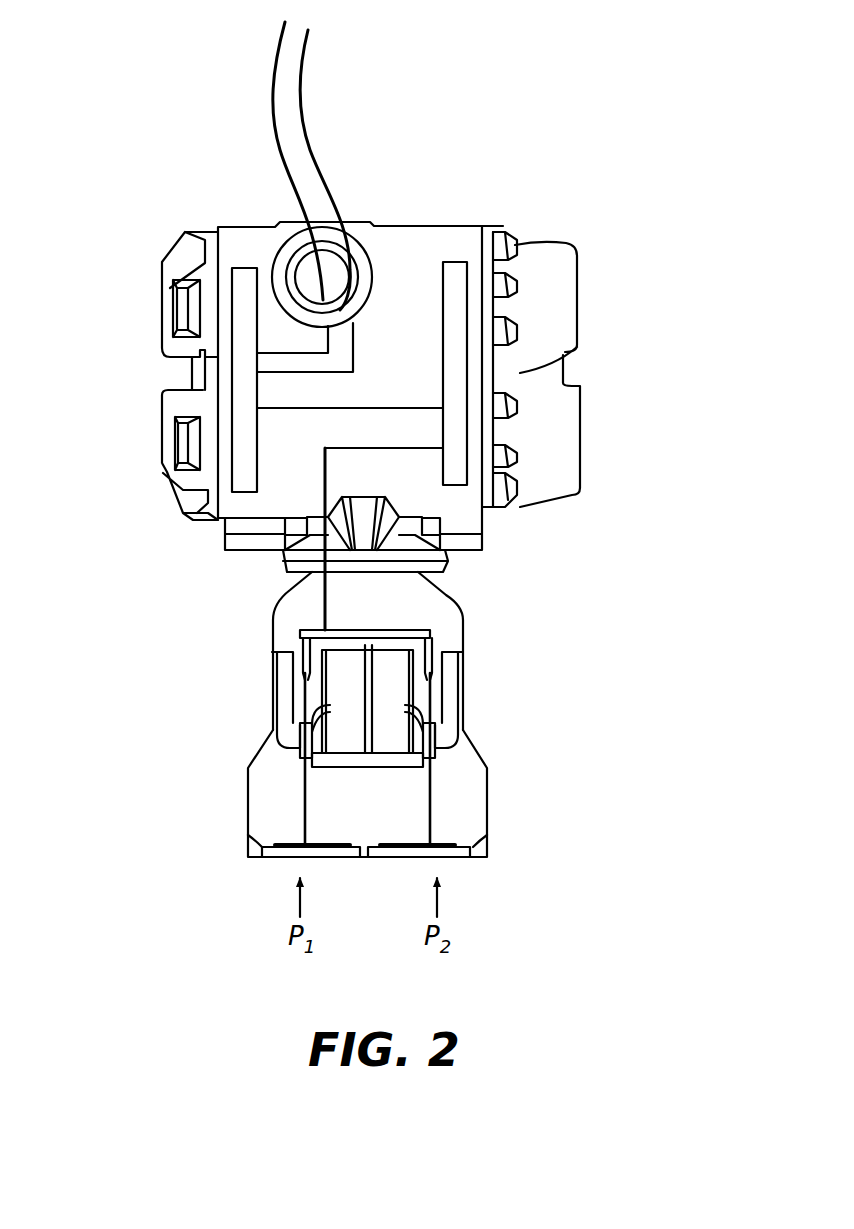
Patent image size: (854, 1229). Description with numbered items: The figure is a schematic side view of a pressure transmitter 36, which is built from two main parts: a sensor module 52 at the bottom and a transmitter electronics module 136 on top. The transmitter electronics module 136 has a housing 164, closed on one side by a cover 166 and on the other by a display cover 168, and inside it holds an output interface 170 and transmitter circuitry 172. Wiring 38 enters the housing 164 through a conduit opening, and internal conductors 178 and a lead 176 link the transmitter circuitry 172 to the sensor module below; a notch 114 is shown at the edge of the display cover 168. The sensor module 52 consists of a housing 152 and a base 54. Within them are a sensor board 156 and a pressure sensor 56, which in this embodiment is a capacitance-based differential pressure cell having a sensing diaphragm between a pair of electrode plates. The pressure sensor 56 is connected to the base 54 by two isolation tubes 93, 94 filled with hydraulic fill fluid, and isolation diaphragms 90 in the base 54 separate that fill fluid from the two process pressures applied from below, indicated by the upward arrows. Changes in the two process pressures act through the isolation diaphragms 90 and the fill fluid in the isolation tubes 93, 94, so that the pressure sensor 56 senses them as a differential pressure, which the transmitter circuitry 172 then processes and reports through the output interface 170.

The pressure transmitter 36 is at (126, 160).
The wiring / cable 38 is at (318, 80).
The transmitter electronics module 136 is at (446, 226).
The housing 164 is at (405, 222).
The output interface 170 is at (248, 266).
The transmitter circuitry 172 is at (452, 274).
The cover 166 is at (168, 406).
The housing cover notch 114 is at (570, 352).
The display cover 168 is at (572, 470).
The internal conductor channel 178 is at (362, 413).
The sensor lead wire 176 is at (323, 596).
The housing 152 is at (462, 606).
The sensor board 156 is at (298, 632).
The pressure sensor 56 is at (398, 657).
The sensor module 52 is at (483, 668).
The isolation tube 94 is at (455, 750).
The isolation tube 93 is at (300, 768).
The base 54 is at (473, 806).
The isolation diaphragms 90 is at (275, 840).